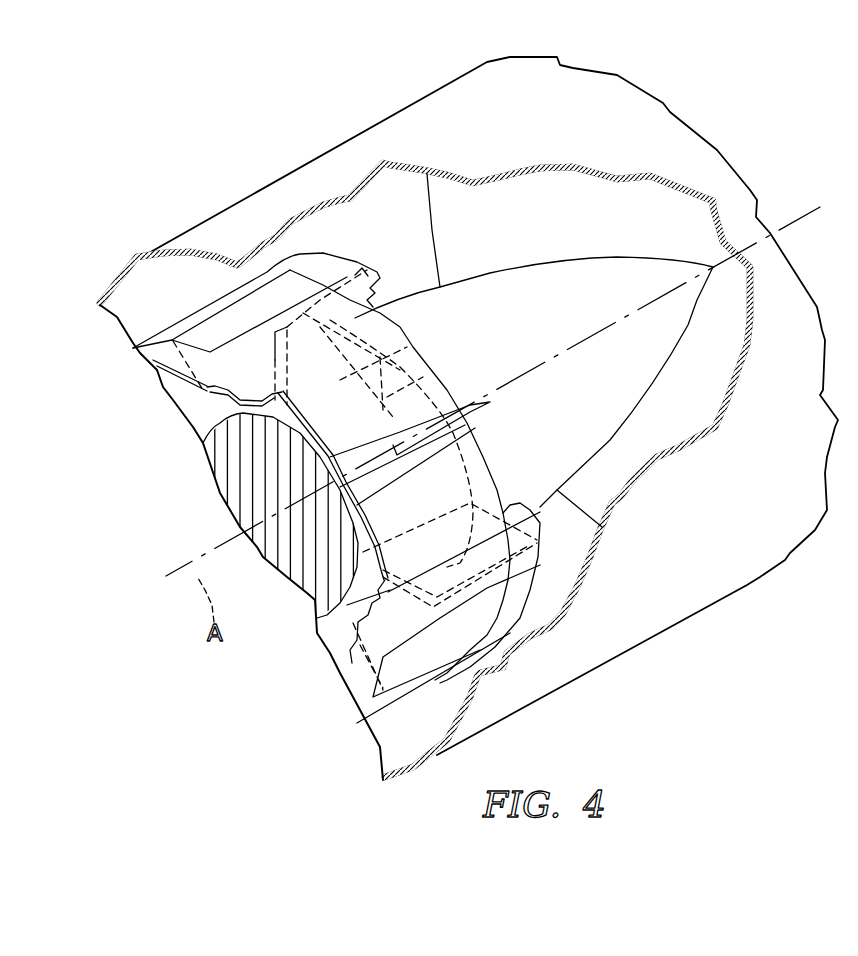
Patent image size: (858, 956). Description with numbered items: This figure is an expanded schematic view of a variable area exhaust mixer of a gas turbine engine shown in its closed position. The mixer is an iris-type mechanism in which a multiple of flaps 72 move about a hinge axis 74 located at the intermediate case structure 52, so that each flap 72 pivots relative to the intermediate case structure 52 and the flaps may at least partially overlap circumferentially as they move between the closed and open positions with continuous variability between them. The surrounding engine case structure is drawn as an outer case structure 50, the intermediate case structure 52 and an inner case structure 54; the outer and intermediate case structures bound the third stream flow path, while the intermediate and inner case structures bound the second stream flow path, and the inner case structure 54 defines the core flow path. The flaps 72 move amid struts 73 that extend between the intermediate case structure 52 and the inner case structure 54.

The outer case structure 50 is at (227, 219).
The intermediate case structure 52 is at (157, 347).
The inner case structure 54 is at (237, 457).
The flap 72 is at (397, 390).
The strut 73 is at (363, 268).
The hinge axis 74 is at (410, 345).